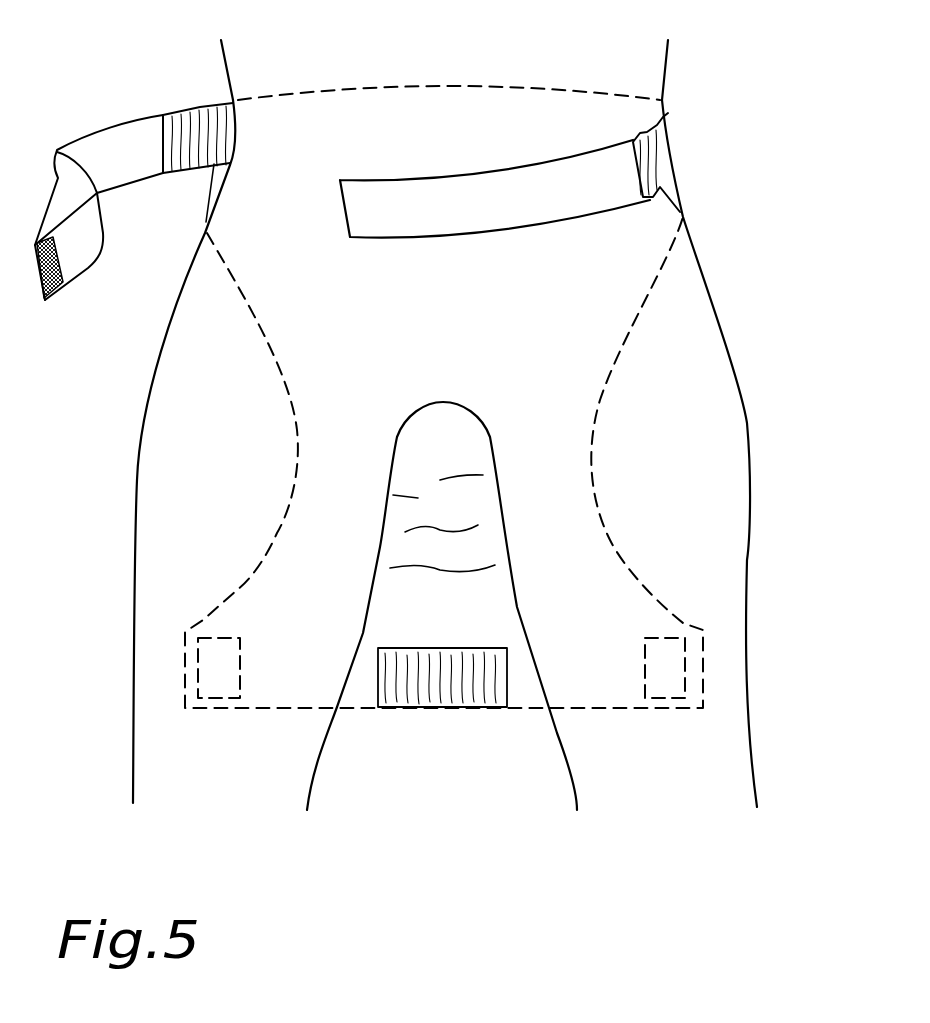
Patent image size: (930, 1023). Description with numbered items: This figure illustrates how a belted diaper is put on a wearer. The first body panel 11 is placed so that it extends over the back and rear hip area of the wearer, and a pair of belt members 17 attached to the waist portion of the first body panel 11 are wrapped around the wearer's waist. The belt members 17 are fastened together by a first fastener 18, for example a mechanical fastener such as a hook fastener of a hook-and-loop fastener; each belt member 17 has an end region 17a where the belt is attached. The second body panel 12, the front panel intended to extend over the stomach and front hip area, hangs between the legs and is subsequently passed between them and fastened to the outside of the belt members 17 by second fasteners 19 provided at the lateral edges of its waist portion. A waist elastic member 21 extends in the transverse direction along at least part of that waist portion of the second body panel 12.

The first body panel 11 is at (283, 213).
The second body panel 12 is at (387, 632).
The belt member 17 is at (95, 118).
The belt fastening portion 17a is at (198, 127).
The first fastener 18 is at (63, 270).
The second fastener 19 is at (667, 667).
The waist elastic member 21 is at (452, 685).